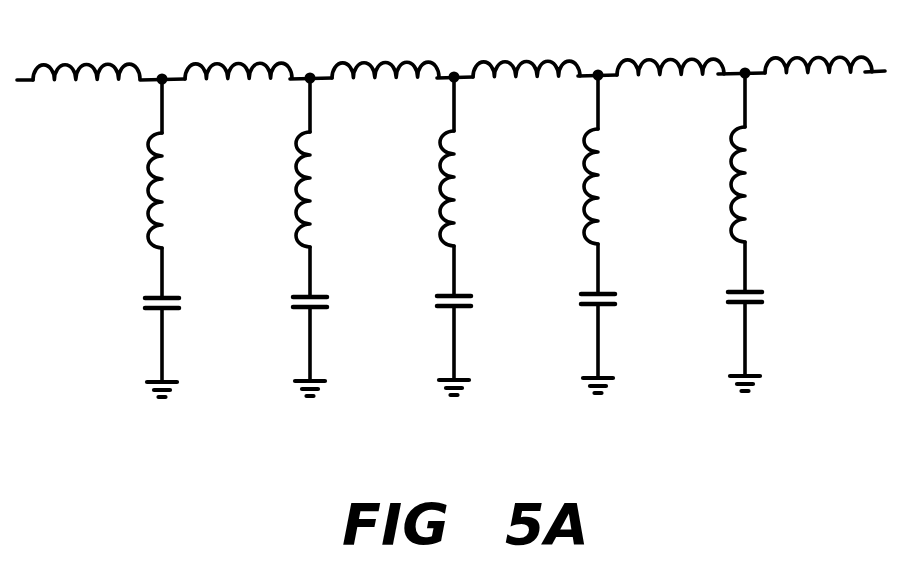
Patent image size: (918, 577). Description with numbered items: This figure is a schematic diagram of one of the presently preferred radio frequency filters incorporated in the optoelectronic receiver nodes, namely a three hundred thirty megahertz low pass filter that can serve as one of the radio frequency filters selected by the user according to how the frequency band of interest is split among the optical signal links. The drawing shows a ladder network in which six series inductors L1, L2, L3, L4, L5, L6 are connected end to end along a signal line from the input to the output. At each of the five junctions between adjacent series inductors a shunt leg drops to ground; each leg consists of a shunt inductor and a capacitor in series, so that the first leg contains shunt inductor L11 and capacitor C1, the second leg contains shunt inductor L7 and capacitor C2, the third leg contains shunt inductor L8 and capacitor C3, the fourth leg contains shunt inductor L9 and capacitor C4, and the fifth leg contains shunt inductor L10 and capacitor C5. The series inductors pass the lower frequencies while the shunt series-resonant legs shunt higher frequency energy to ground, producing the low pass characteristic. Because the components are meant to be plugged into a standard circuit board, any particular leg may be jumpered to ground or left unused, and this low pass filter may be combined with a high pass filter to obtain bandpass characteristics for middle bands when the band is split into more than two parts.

The series inductor L1 is at (103, 63).
The series inductor L2 is at (255, 62).
The series inductor L3 is at (394, 61).
The series inductor L4 is at (541, 60).
The series inductor L5 is at (684, 58).
The series inductor L6 is at (821, 56).
The shunt inductor L11 is at (150, 218).
The shunt inductor L7 is at (298, 217).
The shunt inductor L8 is at (442, 216).
The shunt inductor L9 is at (586, 214).
The shunt inductor L10 is at (733, 212).
The shunt capacitor C1 is at (158, 296).
The shunt capacitor C2 is at (306, 295).
The shunt capacitor C3 is at (450, 294).
The shunt capacitor C4 is at (594, 292).
The shunt capacitor C5 is at (741, 290).